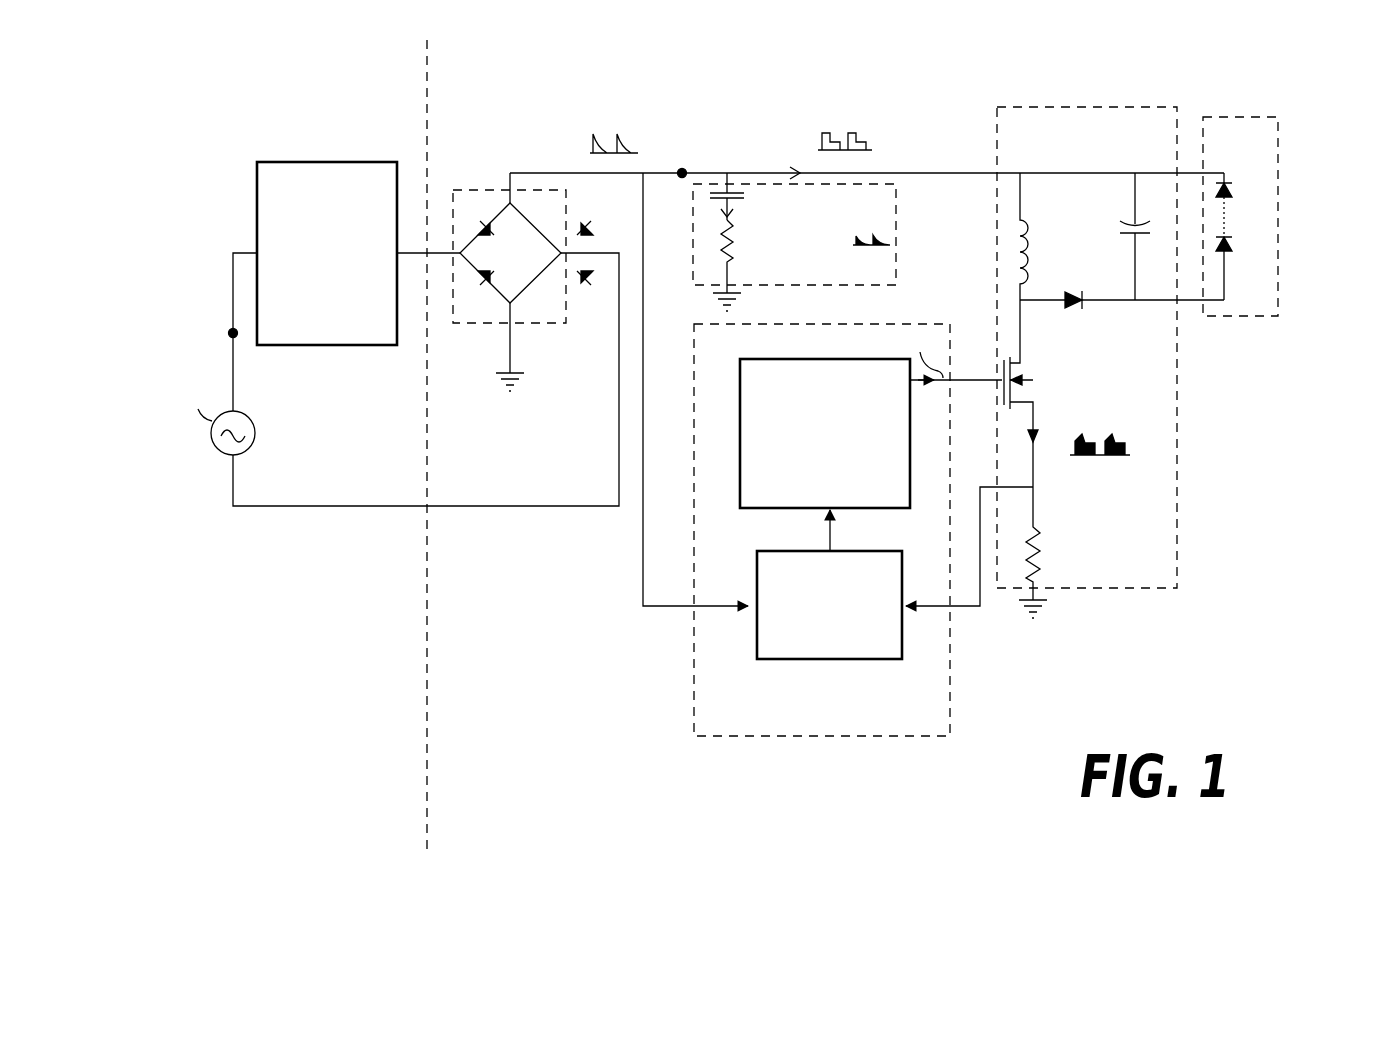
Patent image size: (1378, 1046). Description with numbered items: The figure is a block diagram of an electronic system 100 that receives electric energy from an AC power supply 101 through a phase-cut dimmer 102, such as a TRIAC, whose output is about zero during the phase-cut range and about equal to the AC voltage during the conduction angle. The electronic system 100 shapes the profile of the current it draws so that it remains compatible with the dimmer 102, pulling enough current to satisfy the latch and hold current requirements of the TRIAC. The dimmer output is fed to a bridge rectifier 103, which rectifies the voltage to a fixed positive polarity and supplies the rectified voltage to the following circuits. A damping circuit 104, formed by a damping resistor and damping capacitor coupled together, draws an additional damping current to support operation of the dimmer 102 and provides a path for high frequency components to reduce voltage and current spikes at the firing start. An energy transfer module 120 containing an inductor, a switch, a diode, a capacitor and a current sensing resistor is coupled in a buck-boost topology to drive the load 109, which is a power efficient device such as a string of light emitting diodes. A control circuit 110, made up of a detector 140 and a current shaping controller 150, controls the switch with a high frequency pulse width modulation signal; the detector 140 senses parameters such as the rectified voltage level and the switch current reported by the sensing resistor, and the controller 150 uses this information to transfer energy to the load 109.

The electronic system 100 is at (612, 778).
The AC power supply 101 is at (219, 451).
The dimmer 102 is at (341, 297).
The rectifier 103 is at (470, 188).
The damping circuit 104 is at (897, 223).
The load 109 is at (1283, 234).
The control circuit 110 is at (770, 736).
The energy transfer module 120 is at (1089, 107).
The detector 140 is at (844, 628).
The controller 150 is at (840, 479).